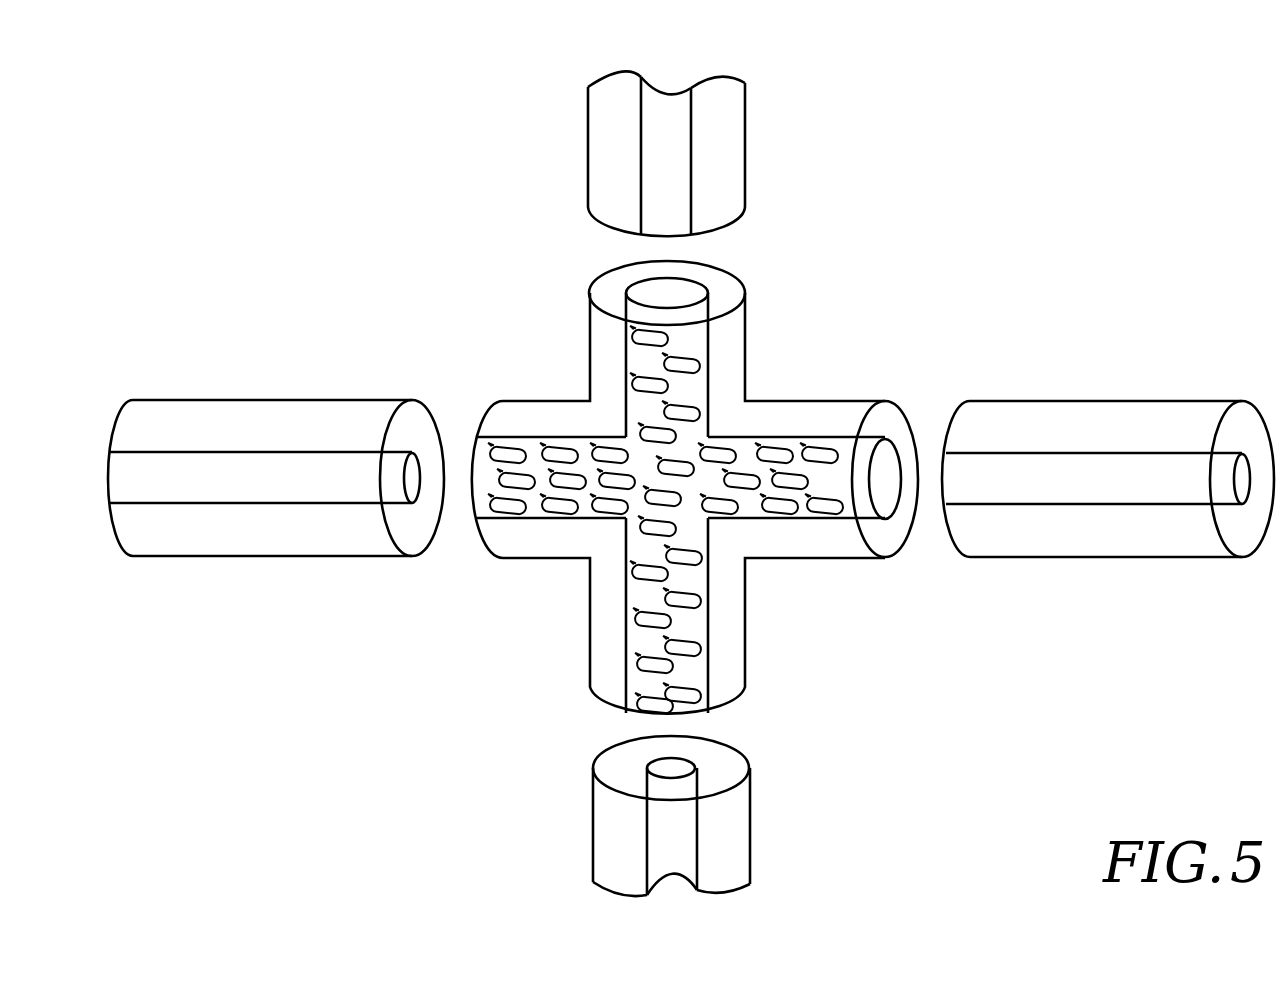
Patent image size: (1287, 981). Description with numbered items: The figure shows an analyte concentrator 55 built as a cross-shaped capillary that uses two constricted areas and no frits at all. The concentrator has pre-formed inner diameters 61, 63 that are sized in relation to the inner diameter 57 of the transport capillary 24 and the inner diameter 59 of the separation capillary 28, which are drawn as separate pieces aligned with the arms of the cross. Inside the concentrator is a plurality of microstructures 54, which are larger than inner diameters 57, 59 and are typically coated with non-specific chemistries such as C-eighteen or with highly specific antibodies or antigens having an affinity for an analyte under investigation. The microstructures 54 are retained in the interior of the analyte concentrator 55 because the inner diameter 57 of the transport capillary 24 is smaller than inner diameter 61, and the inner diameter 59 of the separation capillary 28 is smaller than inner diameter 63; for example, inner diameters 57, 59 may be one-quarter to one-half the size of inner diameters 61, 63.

The transport capillary 24 is at (723, 128).
The separation capillary 28 is at (252, 412).
The microstructures 54 is at (765, 492).
The analyte concentrator 55 is at (707, 623).
The inner diameter of transport capillary 57 is at (657, 103).
The inner diameter of separation capillary 59 is at (229, 489).
The inner diameter of analyte concentrator 61 is at (632, 283).
The inner diameter of analyte concentrator 63 is at (893, 443).